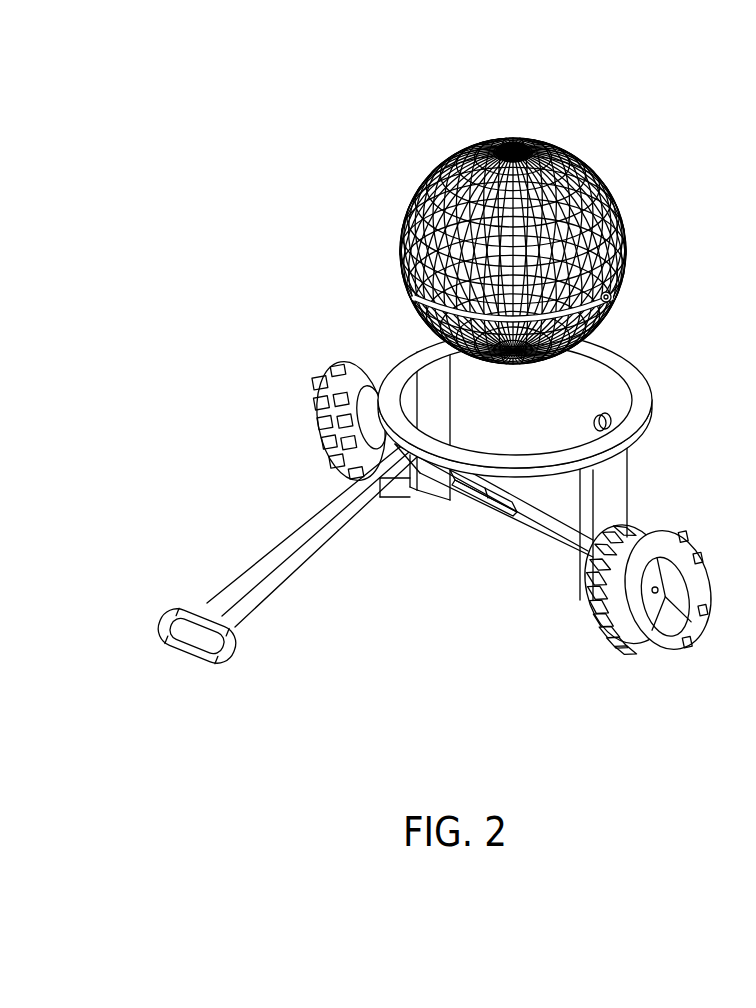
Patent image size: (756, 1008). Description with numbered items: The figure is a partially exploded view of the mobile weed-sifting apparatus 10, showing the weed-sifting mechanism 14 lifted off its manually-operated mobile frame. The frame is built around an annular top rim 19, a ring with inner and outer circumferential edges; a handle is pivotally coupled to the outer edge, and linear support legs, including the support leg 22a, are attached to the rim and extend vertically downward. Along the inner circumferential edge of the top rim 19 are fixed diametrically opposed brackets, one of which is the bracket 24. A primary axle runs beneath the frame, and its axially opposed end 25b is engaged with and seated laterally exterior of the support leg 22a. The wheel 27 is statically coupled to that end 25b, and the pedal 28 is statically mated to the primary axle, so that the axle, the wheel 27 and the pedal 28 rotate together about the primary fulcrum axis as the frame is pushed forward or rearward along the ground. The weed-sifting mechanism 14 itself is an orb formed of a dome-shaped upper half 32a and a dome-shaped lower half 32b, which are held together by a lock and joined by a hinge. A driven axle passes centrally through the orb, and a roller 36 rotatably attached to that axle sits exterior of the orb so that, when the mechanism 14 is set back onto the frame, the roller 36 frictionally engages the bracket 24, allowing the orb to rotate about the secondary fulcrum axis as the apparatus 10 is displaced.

The mobile weed-sifting apparatus 10 is at (318, 169).
The weed-sifting mechanism 14 is at (513, 247).
The annular top rim 19 is at (633, 362).
The linear support leg 22a is at (615, 490).
The bracket 24 is at (607, 421).
The axially opposed end of primary axle 25b is at (658, 592).
The wheel 27 is at (664, 594).
The pedal 28 is at (473, 490).
The dome-shaped upper half 32a is at (434, 165).
The dome-shaped lower half 32b is at (418, 297).
The roller 36 is at (614, 303).